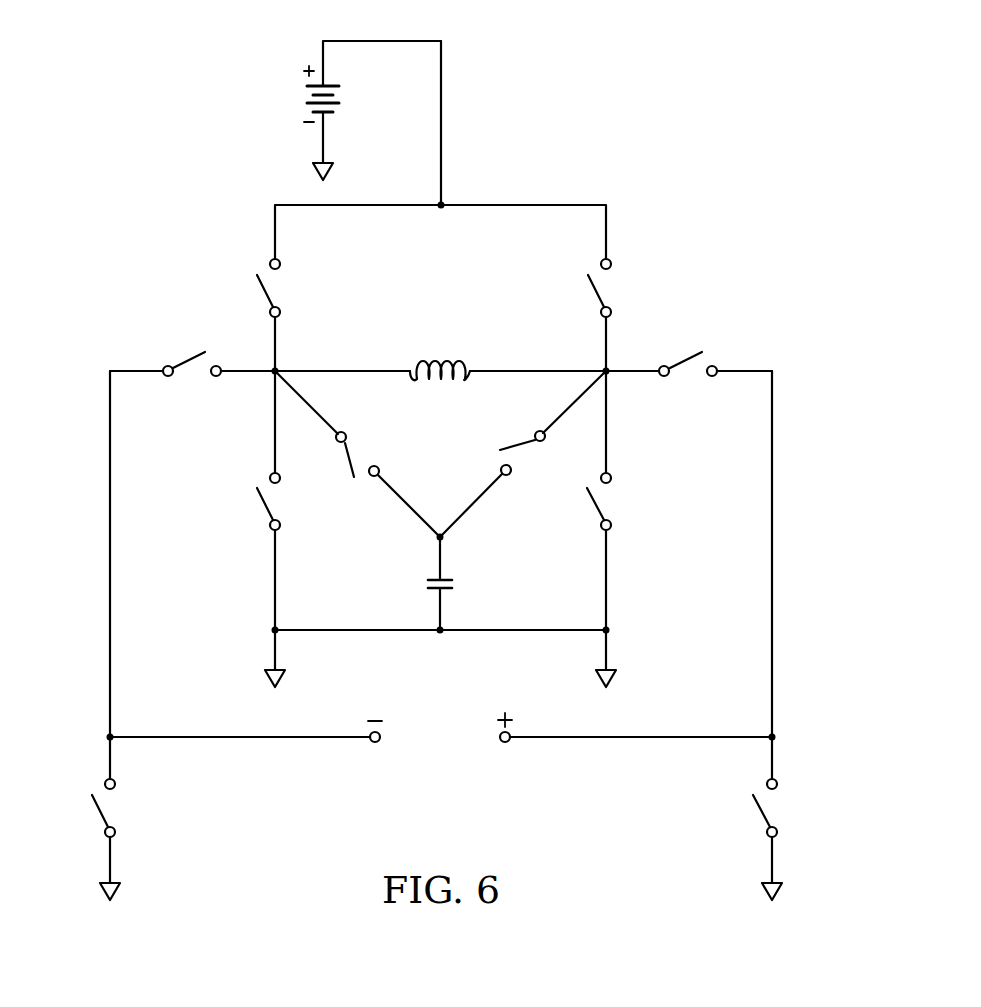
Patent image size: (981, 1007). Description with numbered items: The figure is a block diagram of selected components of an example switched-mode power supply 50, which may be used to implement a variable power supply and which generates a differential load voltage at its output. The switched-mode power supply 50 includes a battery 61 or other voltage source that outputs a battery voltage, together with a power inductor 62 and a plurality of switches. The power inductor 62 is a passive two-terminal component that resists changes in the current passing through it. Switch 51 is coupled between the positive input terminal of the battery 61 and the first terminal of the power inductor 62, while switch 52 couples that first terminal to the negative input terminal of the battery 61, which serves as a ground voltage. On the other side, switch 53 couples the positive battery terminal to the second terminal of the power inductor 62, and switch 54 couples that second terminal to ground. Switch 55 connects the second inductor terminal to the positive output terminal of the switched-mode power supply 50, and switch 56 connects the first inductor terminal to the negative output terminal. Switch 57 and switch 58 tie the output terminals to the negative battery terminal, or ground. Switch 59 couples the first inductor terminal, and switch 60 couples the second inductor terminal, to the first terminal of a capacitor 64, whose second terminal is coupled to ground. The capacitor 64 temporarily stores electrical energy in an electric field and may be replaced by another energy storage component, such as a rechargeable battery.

The switched-mode power supply 50 is at (622, 60).
The battery 61 is at (302, 97).
The switch 51 is at (262, 295).
The switch 52 is at (260, 510).
The switch 53 is at (591, 296).
The switch 54 is at (591, 508).
The switch 55 is at (685, 356).
The switch 56 is at (190, 356).
The switch 57 is at (755, 815).
The switch 58 is at (96, 813).
The switch 59 is at (347, 459).
The switch 60 is at (520, 437).
The power inductor 62 is at (432, 362).
The capacitor 64 is at (425, 582).